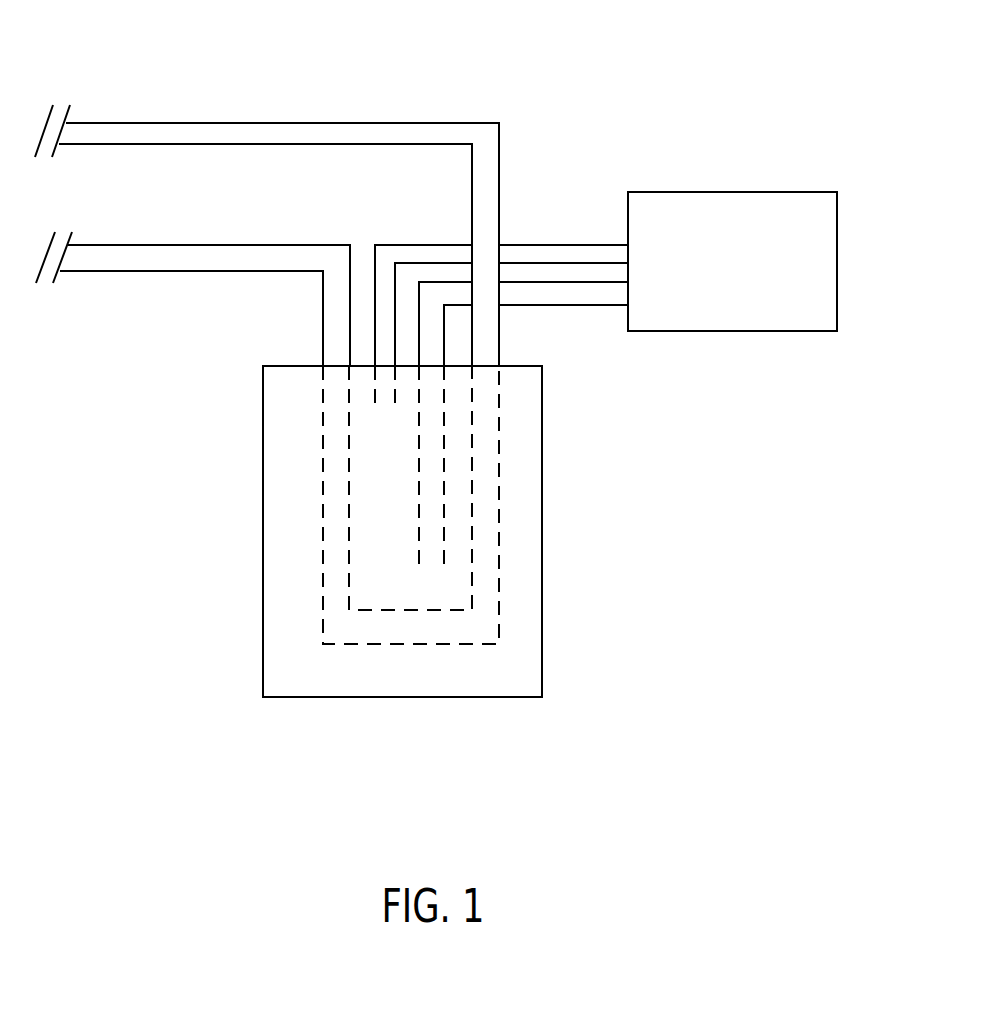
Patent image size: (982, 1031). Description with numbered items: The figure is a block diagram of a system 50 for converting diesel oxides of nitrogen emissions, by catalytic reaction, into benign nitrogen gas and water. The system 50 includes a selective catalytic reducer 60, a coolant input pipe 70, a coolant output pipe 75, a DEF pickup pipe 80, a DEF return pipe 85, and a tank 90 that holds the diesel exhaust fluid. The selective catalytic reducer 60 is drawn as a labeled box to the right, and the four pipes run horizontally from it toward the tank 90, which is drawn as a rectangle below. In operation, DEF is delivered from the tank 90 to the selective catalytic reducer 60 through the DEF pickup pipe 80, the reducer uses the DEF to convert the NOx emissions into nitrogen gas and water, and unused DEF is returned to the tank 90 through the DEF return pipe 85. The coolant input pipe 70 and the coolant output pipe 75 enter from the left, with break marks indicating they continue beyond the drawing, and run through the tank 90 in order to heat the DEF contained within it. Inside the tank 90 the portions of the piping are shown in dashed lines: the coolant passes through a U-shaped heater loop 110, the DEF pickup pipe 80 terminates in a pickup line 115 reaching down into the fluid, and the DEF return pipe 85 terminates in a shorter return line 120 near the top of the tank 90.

The system 50 is at (682, 80).
The selective catalytic reducer 60 is at (732, 332).
The coolant input pipe 70 is at (167, 273).
The coolant output pipe 75 is at (326, 121).
The DEF pickup pipe 80 is at (562, 307).
The DEF return pipe 85 is at (582, 243).
The tank 90 is at (407, 698).
The heater loop 110 is at (499, 615).
The pickup line 115 is at (443, 495).
The return line 120 is at (372, 412).